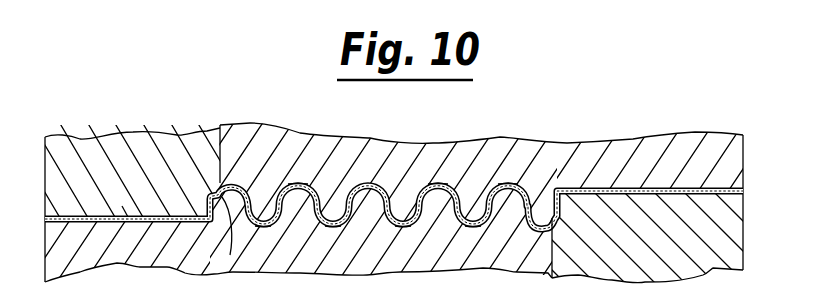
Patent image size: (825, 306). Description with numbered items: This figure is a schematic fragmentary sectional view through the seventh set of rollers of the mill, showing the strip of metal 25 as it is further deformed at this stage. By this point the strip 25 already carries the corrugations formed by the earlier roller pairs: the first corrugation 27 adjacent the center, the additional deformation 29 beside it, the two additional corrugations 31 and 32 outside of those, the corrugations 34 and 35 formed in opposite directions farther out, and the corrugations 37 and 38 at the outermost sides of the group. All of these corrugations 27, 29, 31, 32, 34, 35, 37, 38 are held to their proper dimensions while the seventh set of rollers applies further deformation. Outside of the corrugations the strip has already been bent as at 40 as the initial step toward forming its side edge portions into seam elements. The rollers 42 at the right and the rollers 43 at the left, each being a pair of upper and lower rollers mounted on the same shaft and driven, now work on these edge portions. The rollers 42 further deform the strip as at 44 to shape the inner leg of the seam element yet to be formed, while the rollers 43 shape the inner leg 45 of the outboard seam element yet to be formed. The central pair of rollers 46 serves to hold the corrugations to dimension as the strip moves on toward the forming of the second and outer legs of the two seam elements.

The strip of metal 25 is at (199, 222).
The first corrugation 27 is at (366, 183).
The additional deformation 29 is at (403, 228).
The additional corrugation 31 is at (335, 228).
The additional corrugation 32 is at (439, 183).
The additional corrugation 34 is at (298, 183).
The additional corrugation 35 is at (470, 230).
The additional corrugation 37 is at (266, 228).
The additional corrugation 38 is at (510, 183).
The deformation toward seam element 40 is at (229, 183).
The rollers at the right 42 is at (738, 171).
The rollers at the left 43 is at (98, 257).
The deformation for inner leg of seam element 44 is at (560, 216).
The inner leg of outboard seam element 45 is at (230, 255).
The central pair of rollers 46 is at (545, 230).